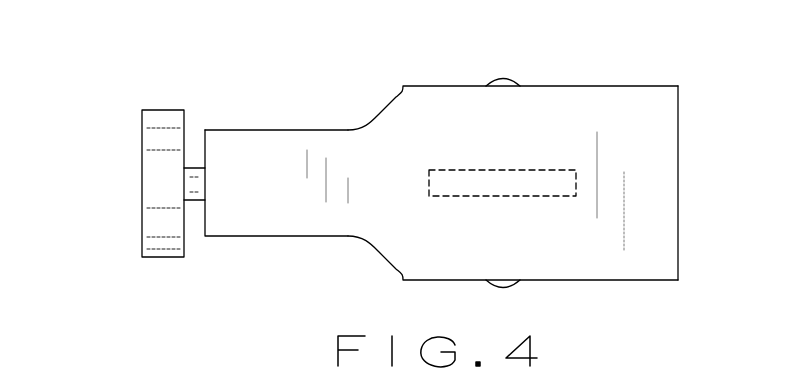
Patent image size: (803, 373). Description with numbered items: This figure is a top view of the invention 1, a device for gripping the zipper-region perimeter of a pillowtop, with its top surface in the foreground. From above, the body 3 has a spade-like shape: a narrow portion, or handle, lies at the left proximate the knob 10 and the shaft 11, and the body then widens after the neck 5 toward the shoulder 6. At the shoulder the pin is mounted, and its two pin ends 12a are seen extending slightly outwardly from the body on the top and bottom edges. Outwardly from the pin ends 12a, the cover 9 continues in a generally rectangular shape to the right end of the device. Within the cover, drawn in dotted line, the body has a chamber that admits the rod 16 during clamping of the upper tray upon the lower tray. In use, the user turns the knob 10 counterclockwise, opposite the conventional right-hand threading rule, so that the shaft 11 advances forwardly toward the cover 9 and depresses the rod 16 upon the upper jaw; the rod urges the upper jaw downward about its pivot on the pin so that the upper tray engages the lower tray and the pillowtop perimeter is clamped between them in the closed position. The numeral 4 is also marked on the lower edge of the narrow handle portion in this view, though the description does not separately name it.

The invention 1 is at (125, 100).
The body 3 is at (433, 86).
The lower narrow portion of housing 4 is at (257, 238).
The neck 5 is at (303, 129).
The shoulder 6 is at (420, 273).
The cover 9 is at (658, 193).
The knob 10 is at (152, 189).
The shaft 11 is at (197, 168).
The pin ends 12a is at (505, 79).
The rod 16 is at (552, 170).